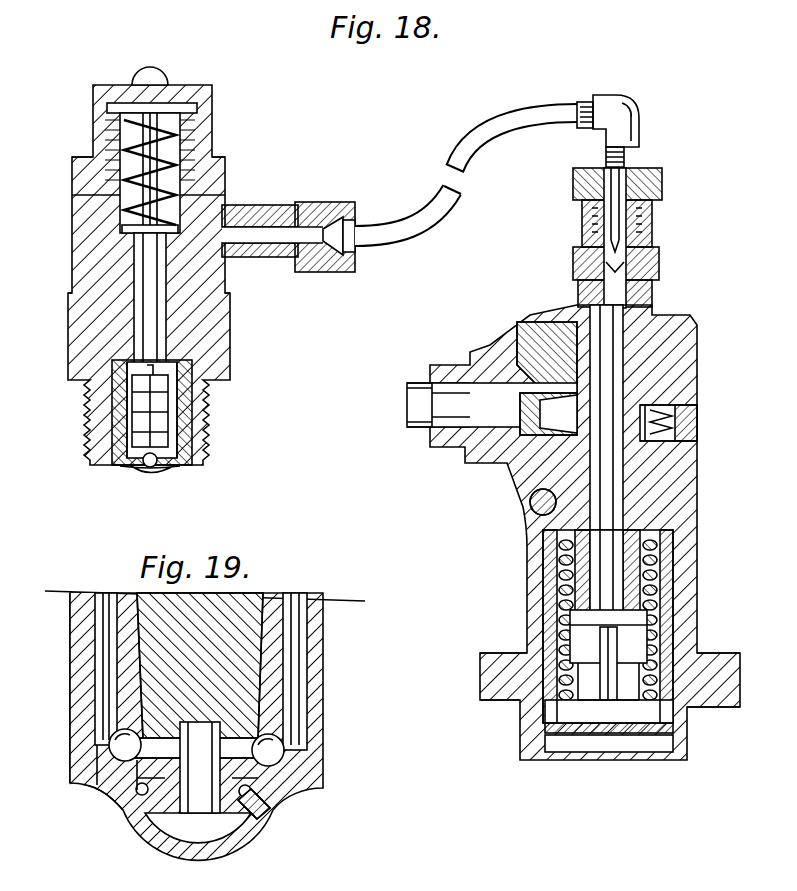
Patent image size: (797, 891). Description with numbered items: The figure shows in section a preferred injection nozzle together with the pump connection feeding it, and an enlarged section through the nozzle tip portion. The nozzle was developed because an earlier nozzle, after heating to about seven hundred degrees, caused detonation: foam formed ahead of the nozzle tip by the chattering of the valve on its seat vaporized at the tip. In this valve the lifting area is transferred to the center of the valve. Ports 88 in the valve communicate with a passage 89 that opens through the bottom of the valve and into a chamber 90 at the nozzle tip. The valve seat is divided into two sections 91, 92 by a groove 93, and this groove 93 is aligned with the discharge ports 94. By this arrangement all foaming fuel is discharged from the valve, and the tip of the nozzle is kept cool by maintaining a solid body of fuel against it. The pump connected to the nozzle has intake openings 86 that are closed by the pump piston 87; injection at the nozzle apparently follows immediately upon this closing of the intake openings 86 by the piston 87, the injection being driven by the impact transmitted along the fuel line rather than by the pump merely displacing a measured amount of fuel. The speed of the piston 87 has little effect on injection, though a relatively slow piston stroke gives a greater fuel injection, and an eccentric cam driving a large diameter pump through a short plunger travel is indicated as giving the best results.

In FIG. 18, the intake openings 86 is at (567, 447).
In FIG. 18, the piston 87 is at (600, 553).
In FIG. 18, the ports 88 is at (162, 454).
In FIG. 19, the ports 88 is at (252, 740).
In FIG. 18, the passage 89 is at (125, 467).
In FIG. 19, the passage 89 is at (122, 797).
In FIG. 18, the chamber 90 is at (150, 470).
In FIG. 19, the chamber 90 is at (202, 822).
In FIG. 19, the valve seat section 91 is at (254, 797).
In FIG. 19, the groove 93 is at (137, 785).
In FIG. 18, the valve seat section 92 is at (170, 466).
In FIG. 19, the valve seat section 92 is at (262, 818).
In FIG. 18, the discharge ports 94 is at (145, 468).
In FIG. 19, the discharge ports 94 is at (140, 796).